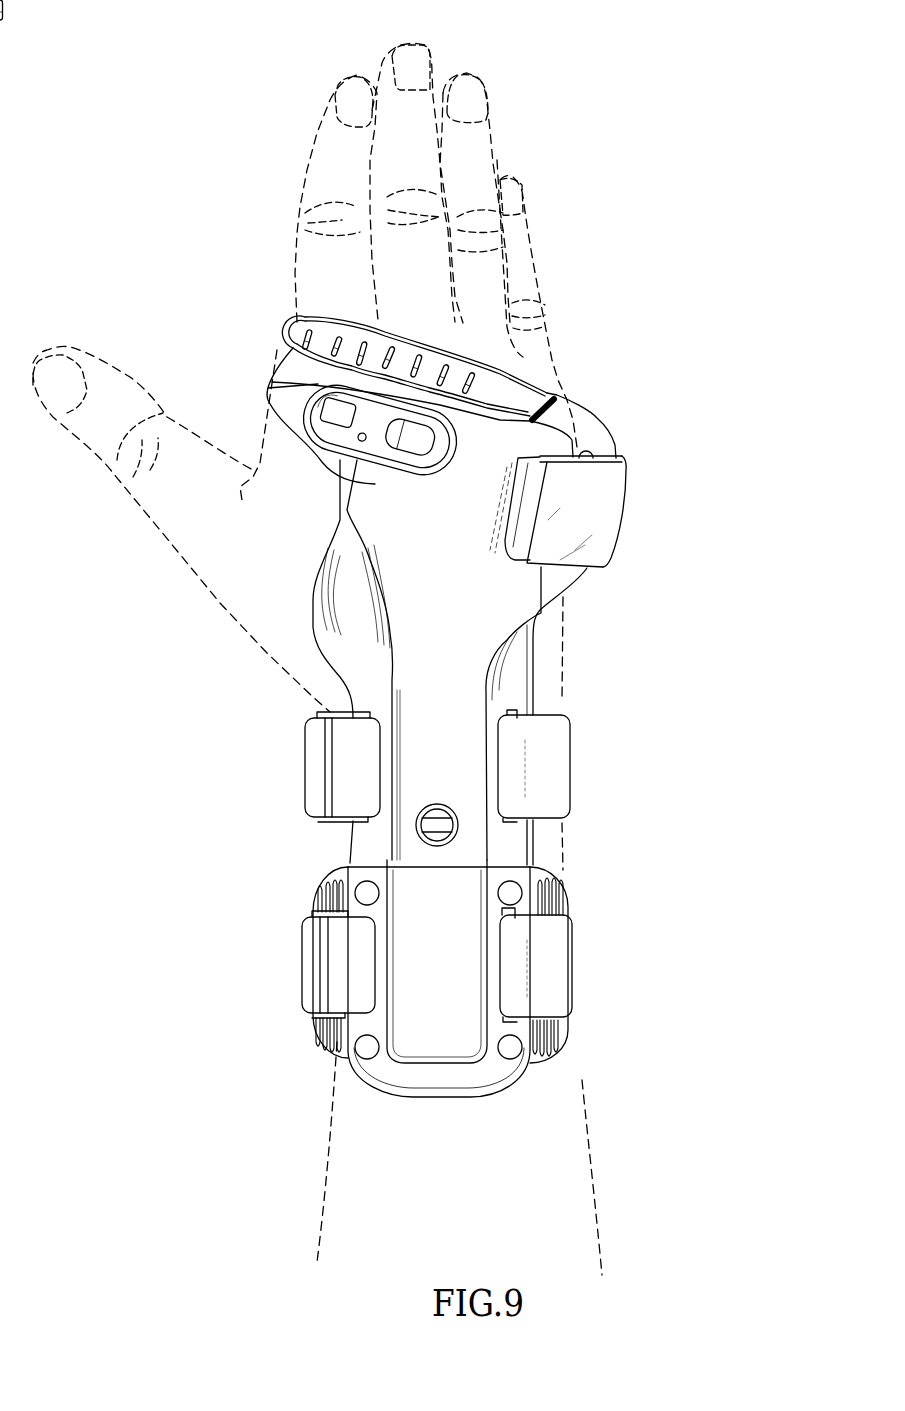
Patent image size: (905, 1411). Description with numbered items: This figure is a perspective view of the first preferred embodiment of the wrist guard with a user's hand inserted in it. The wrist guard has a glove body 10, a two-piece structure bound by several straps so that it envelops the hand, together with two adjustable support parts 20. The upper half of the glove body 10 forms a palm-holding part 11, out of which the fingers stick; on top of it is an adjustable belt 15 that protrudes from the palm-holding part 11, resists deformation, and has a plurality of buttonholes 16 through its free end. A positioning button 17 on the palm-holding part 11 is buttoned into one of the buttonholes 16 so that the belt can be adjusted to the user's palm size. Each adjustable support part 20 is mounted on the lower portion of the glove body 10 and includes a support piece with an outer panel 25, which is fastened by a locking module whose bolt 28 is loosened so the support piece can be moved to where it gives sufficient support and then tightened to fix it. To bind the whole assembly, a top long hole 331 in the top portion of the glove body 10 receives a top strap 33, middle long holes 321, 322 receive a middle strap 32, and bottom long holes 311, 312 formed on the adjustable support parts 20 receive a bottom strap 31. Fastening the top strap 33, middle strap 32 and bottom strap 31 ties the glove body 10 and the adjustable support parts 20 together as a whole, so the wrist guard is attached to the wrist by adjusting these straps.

The glove body 10 is at (621, 427).
The palm-holding part 11 is at (580, 418).
The adjustable belt 15 is at (318, 335).
The buttonholes 16 is at (340, 412).
The positioning button 17 is at (418, 441).
The adjustable support part 20 is at (320, 883).
The outer panel 25 is at (457, 1057).
The bolt 28 is at (437, 815).
The bottom strap 31 is at (557, 968).
The bottom long hole 311 is at (347, 1012).
The bottom long hole 312 is at (510, 913).
The middle strap 32 is at (555, 755).
The middle long hole 321 is at (367, 715).
The middle long hole 322 is at (513, 717).
The top strap 33 is at (603, 523).
The top long hole 331 is at (518, 505).